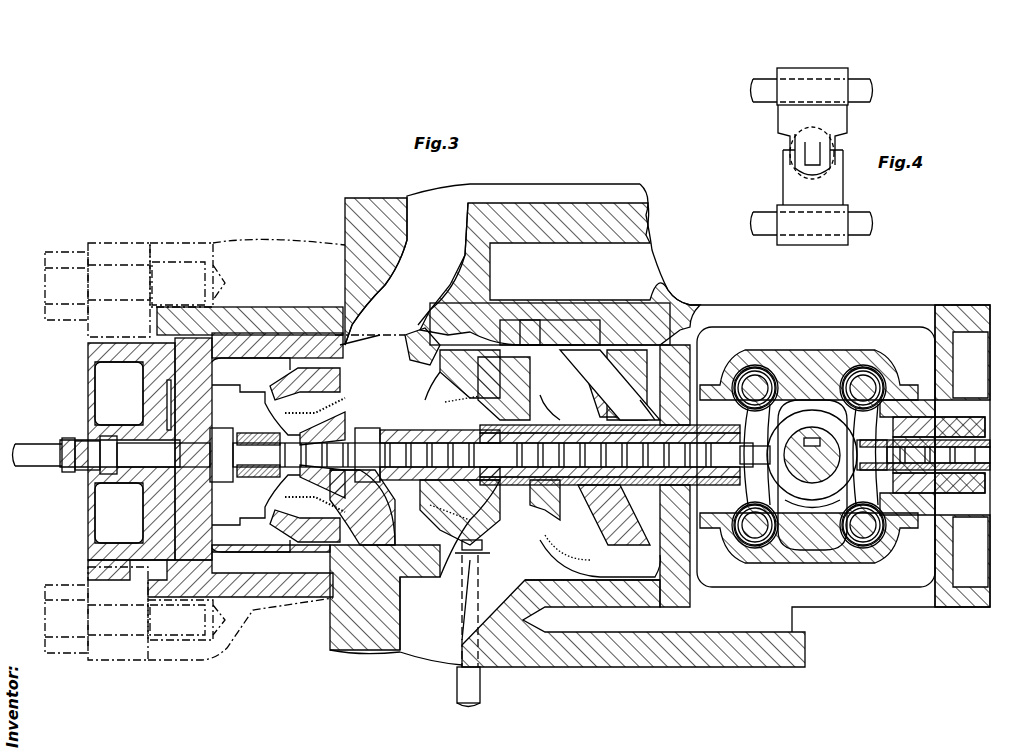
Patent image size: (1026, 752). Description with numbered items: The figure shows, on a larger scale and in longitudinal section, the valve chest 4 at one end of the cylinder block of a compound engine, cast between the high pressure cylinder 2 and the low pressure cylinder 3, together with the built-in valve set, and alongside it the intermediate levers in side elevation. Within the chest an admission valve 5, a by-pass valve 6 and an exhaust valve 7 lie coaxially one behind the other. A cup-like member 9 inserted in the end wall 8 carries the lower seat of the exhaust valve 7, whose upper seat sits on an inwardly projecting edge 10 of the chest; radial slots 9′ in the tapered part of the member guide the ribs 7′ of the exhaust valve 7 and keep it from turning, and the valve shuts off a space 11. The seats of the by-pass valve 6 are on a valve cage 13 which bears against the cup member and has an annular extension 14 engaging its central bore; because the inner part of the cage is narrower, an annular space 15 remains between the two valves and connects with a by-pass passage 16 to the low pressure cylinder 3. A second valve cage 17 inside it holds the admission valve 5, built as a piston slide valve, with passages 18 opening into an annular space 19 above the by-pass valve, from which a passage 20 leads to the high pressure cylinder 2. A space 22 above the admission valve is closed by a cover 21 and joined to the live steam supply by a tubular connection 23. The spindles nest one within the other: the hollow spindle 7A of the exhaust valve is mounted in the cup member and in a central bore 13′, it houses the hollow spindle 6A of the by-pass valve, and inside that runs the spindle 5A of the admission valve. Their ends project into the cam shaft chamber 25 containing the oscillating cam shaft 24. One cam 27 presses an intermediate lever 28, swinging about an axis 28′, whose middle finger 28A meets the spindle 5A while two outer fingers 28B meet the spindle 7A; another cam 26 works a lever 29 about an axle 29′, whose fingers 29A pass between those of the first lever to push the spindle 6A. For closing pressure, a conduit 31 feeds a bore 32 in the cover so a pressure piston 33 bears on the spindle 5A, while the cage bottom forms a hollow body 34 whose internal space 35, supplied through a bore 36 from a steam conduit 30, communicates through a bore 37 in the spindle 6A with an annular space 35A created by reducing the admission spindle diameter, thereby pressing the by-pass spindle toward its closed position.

In FIG. 3, the high pressure cylinder 2 is at (568, 218).
In FIG. 3, the low pressure cylinder 3 is at (552, 645).
In FIG. 3, the valve chest 4 is at (589, 318).
In FIG. 3, the admission valve 5 is at (313, 500).
In FIG. 3, the spindle of the admission valve 5A is at (374, 440).
In FIG. 3, the by-pass valve 6 is at (443, 517).
In FIG. 3, the hollow spindle of the by-pass valve 6A is at (442, 528).
In FIG. 3, the exhaust valve 7 is at (570, 533).
In FIG. 3, the ribs of the exhaust valve 7′ is at (575, 397).
In FIG. 3, the hollow spindle of the exhaust valve 7A is at (635, 500).
In FIG. 3, the end wall of the valve chest 8 is at (680, 345).
In FIG. 3, the cup-like member 9 is at (627, 362).
In FIG. 3, the radial slots 9′ is at (560, 410).
In FIG. 3, the inwardly projecting edge 10 is at (548, 340).
In FIG. 3, the space 11 is at (620, 578).
In FIG. 3, the valve cage 13 is at (277, 563).
In FIG. 3, the central bore 13′ is at (518, 397).
In FIG. 3, the annular extension 14 is at (548, 493).
In FIG. 3, the annular space 15 is at (522, 330).
In FIG. 3, the by-pass passage 16 is at (440, 647).
In FIG. 3, the second valve cage 17 is at (280, 530).
In FIG. 3, the passages 18 is at (322, 388).
In FIG. 3, the annular space 19 is at (378, 543).
In FIG. 3, the passage 20 is at (340, 282).
In FIG. 3, the cover 21 is at (152, 386).
In FIG. 3, the space 22 is at (230, 403).
In FIG. 3, the tubular connection 23 is at (205, 285).
In FIG. 3, the cam shaft 24 is at (807, 473).
In FIG. 3, the cam shaft chamber 25 is at (860, 352).
In FIG. 3, the cam 26 is at (818, 407).
In FIG. 3, the cam 27 is at (825, 508).
In FIG. 3, the intermediate lever 28 is at (753, 492).
In FIG. 4, the intermediate lever 28 is at (833, 188).
In FIG. 3, the axis 28′ is at (748, 547).
In FIG. 4, the axis 28′ is at (857, 218).
In FIG. 4, the middle finger 28A is at (806, 162).
In FIG. 4, the outer fingers 28B is at (787, 158).
In FIG. 3, the intermediate lever 29 is at (767, 417).
In FIG. 4, the intermediate lever 29 is at (833, 112).
In FIG. 3, the axle 29′ is at (753, 372).
In FIG. 4, the axle 29′ is at (857, 84).
In FIG. 4, the fingers 29A is at (795, 142).
In FIG. 3, the steam conduit 30 is at (483, 683).
In FIG. 3, the conduit 31 is at (33, 466).
In FIG. 3, the bore 32 is at (132, 462).
In FIG. 3, the pressure piston 33 is at (165, 455).
In FIG. 3, the hollow body 34 is at (413, 340).
In FIG. 3, the internal space 35 is at (450, 390).
In FIG. 3, the annular space 35A is at (490, 380).
In FIG. 3, the bore 36 is at (496, 554).
In FIG. 3, the bore 37 is at (477, 547).